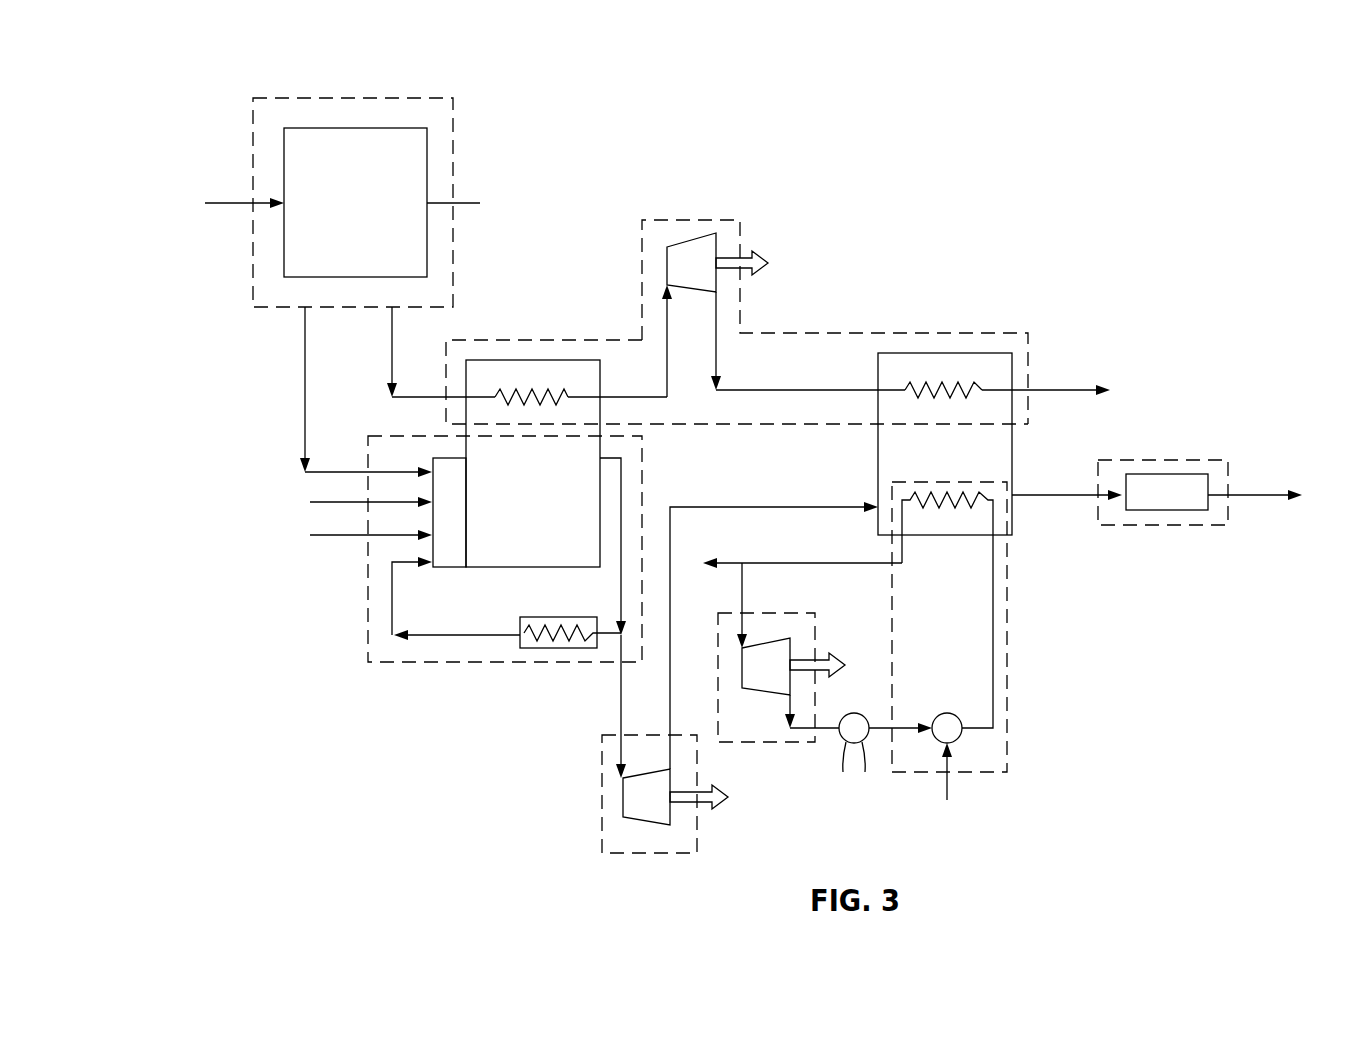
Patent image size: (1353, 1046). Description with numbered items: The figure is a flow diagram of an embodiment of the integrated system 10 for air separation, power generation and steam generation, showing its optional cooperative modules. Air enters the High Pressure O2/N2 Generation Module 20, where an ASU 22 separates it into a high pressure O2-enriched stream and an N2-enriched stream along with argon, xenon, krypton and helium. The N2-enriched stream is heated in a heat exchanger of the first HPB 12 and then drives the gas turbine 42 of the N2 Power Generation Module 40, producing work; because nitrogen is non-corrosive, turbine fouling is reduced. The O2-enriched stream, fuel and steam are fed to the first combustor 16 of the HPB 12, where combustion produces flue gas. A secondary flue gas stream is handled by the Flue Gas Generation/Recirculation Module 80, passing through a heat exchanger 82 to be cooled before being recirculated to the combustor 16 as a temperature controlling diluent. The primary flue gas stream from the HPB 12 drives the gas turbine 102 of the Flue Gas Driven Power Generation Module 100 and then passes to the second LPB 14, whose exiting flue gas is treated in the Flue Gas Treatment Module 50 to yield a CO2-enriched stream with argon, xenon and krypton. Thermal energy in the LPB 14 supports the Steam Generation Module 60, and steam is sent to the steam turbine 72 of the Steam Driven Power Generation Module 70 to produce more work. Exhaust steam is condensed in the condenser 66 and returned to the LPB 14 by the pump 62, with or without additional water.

The integrated system 10 is at (872, 218).
The first HPB 12 is at (515, 360).
The second LPB 14 is at (962, 352).
The first combustor 16 is at (447, 458).
The High Pressure O2/N2 Generation Module 20 is at (478, 83).
The ASU 22 is at (427, 163).
The N2 Power Generation Module 40 is at (765, 322).
The gas turbine 42 is at (716, 237).
The Flue Gas Treatment Module 50 is at (1153, 540).
The Steam Generation Module 60 is at (1018, 758).
The pump 62 is at (945, 712).
The condenser 66 is at (868, 740).
The Steam Driven Power Generation Module 70 is at (757, 750).
The steam turbine 72 is at (790, 641).
The Flue Gas Generation/Recirculation Module 80 is at (377, 675).
The heat exchanger 82 is at (562, 650).
The Flue Gas Driven Power Generation Module 100 is at (582, 800).
The gas turbine 102 is at (662, 812).